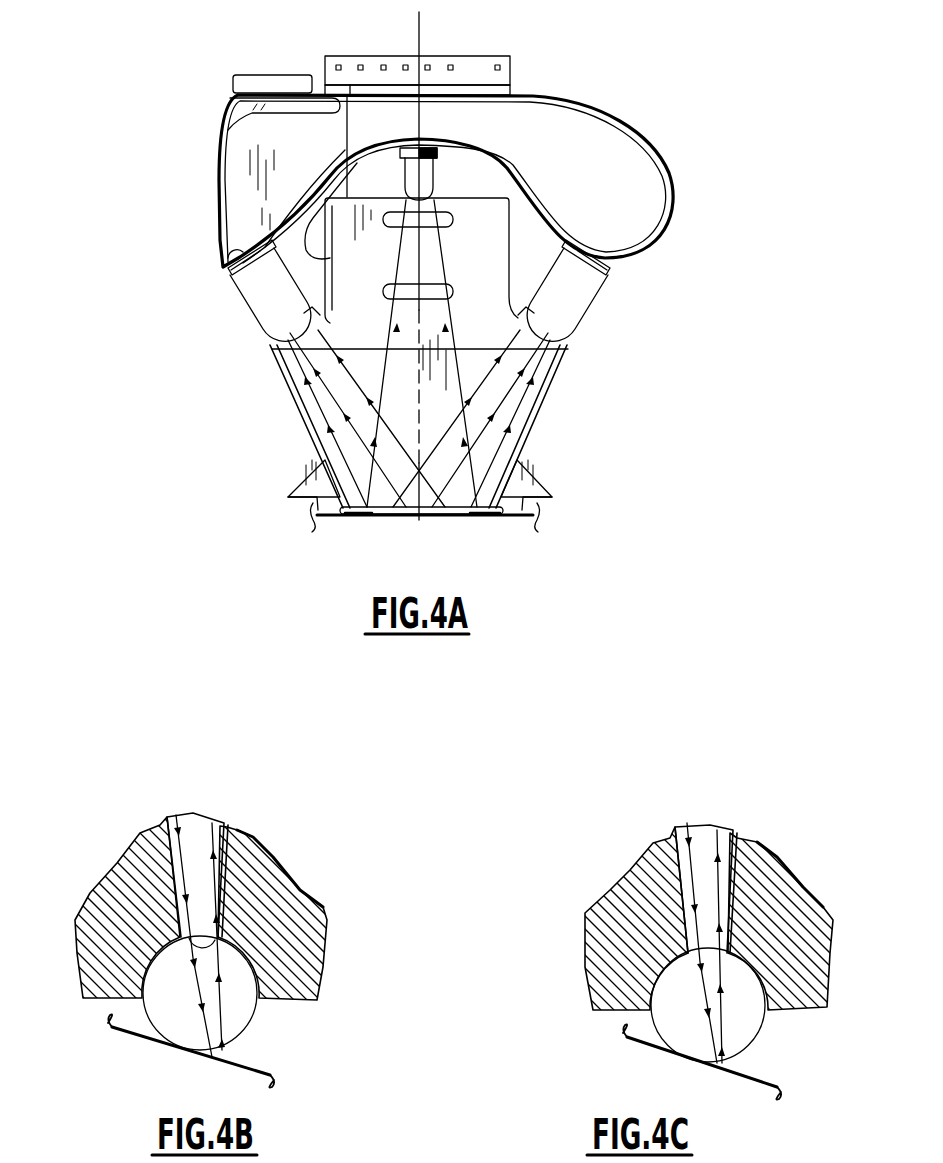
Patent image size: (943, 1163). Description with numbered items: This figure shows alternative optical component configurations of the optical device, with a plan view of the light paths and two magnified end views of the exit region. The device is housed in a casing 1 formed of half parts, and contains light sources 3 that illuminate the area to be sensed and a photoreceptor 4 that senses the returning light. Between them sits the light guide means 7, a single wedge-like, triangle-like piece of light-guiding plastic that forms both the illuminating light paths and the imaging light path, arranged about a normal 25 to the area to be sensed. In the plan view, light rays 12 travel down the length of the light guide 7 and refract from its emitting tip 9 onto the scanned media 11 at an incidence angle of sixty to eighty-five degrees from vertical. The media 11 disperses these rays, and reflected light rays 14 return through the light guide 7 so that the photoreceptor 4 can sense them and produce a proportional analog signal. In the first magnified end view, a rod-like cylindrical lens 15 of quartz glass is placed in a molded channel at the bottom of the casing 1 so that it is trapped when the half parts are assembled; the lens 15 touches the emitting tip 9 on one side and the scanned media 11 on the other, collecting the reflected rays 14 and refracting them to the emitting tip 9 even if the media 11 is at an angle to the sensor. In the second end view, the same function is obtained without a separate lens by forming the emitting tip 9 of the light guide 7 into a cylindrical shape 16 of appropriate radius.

In FIG. 4A, the casing 1 is at (262, 73).
In FIG. 4B, the casing 1 is at (323, 912).
In FIG. 4C, the casing 1 is at (833, 922).
In FIG. 4A, the light sources 3 is at (265, 295).
In FIG. 4A, the photoreceptor 4 is at (423, 192).
In FIG. 4A, the light guide means 7 is at (493, 230).
In FIG. 4B, the light guide means 7 is at (197, 813).
In FIG. 4C, the light guide means 7 is at (705, 823).
In FIG. 4B, the emitting tip 9 is at (197, 960).
In FIG. 4A, the scanned media 11 is at (378, 517).
In FIG. 4B, the scanned media 11 is at (150, 1042).
In FIG. 4C, the scanned media 11 is at (658, 1052).
In FIG. 4A, the light rays 12 is at (483, 430).
In FIG. 4B, the light rays 12 is at (170, 870).
In FIG. 4C, the light rays 12 is at (677, 880).
In FIG. 4A, the reflected light rays 14 is at (385, 368).
In FIG. 4B, the reflected light rays 14 is at (217, 865).
In FIG. 4C, the reflected light rays 14 is at (727, 887).
In FIG. 4A, the cylindrical lens 15 is at (490, 520).
In FIG. 4B, the cylindrical lens 15 is at (247, 1037).
In FIG. 4C, the cylindrical shape 16 is at (752, 1048).
In FIG. 4A, the normal 25 is at (420, 40).